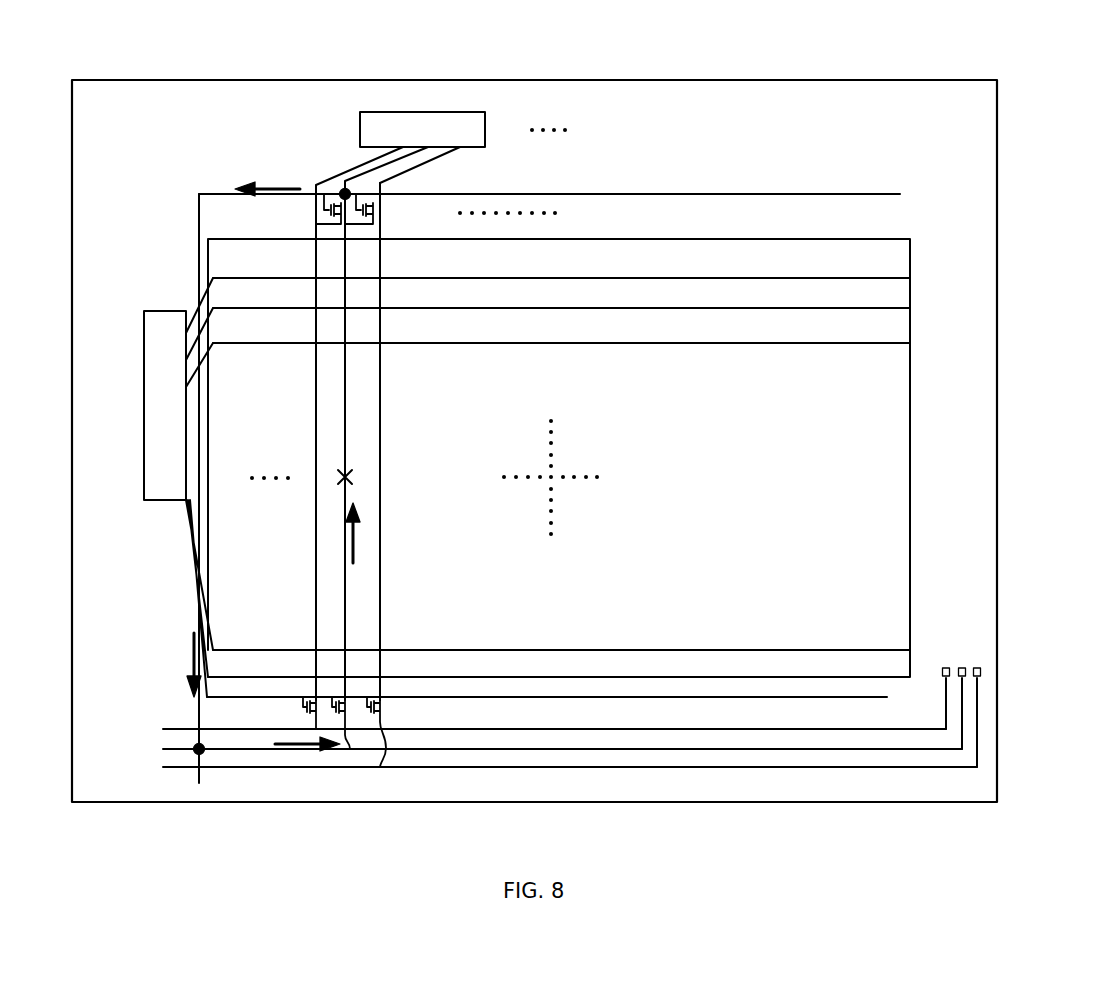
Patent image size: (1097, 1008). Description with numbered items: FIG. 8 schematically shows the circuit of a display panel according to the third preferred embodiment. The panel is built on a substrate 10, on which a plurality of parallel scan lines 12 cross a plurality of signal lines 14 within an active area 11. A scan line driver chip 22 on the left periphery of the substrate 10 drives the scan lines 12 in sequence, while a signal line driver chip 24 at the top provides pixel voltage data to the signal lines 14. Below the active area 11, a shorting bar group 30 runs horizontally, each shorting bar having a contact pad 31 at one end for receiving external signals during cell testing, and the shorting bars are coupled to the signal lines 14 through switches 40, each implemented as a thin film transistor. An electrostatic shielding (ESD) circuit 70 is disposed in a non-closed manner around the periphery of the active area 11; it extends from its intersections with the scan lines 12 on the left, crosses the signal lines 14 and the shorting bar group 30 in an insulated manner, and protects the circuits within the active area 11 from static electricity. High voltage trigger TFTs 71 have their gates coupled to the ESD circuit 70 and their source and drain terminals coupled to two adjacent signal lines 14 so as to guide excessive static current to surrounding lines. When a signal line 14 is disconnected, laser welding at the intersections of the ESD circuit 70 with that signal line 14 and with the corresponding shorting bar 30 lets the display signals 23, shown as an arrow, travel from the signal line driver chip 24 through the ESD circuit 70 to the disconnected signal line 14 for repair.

The substrate 10 is at (1000, 120).
The active area 11 is at (910, 262).
The scan lines 12 is at (729, 350).
The signal lines 14 is at (390, 562).
The scan line driver chip 22 is at (165, 500).
The display signals 23 is at (279, 178).
The signal line driver chip 24 is at (455, 113).
The shorting bar group 30 is at (160, 731).
The contact pad 31 is at (983, 664).
The switches 40 is at (392, 712).
The electrostatic shielding (ESD) circuit 70 is at (839, 193).
The high voltage trigger TFT 71 is at (392, 213).